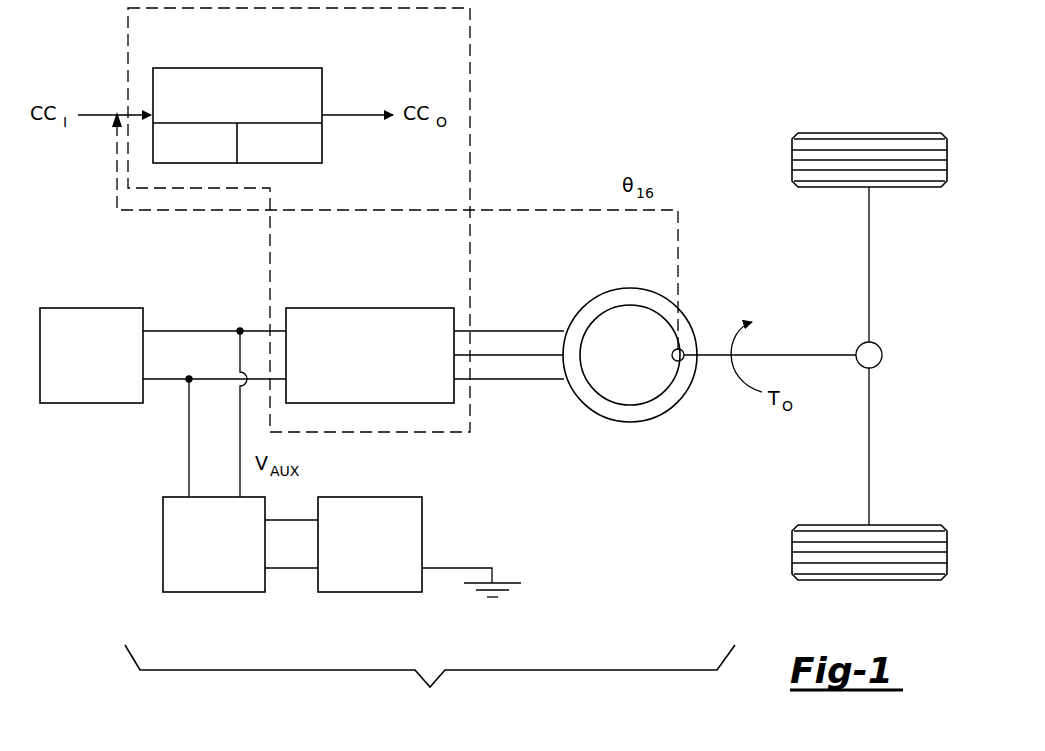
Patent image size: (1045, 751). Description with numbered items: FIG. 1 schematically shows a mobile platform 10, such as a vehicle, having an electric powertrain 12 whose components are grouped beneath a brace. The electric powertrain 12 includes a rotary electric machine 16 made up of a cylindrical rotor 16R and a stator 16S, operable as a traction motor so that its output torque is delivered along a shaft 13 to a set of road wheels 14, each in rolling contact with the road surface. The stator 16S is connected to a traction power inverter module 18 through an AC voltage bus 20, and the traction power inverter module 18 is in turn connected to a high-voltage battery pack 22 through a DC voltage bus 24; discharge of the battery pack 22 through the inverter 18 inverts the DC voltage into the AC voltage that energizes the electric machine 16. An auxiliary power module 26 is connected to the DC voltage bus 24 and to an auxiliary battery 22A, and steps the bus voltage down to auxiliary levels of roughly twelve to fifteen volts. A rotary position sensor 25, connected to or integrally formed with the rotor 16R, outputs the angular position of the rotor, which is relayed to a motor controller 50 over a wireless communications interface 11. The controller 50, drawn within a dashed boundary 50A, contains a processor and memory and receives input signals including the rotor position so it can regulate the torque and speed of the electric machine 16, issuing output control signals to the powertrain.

The mobile platform 10 is at (746, 58).
The wireless communications interface 11 is at (546, 172).
The electric powertrain 12 is at (430, 681).
The output shaft / drive axle 13 is at (803, 355).
The road wheels 14 is at (870, 133).
The rotary electric machine 16 is at (600, 438).
The rotor 16R is at (631, 405).
The stator 16S is at (688, 335).
The traction power inverter module 18 is at (372, 308).
The AC voltage bus 20 is at (548, 401).
The high-voltage battery pack 22 is at (88, 403).
The auxiliary battery 22A is at (368, 592).
The DC voltage bus 24 is at (176, 290).
The rotary position sensor 25 is at (698, 362).
The auxiliary power module 26 is at (212, 592).
The motor controller 50 is at (240, 68).
The controller boundary / control system 50A is at (470, 85).